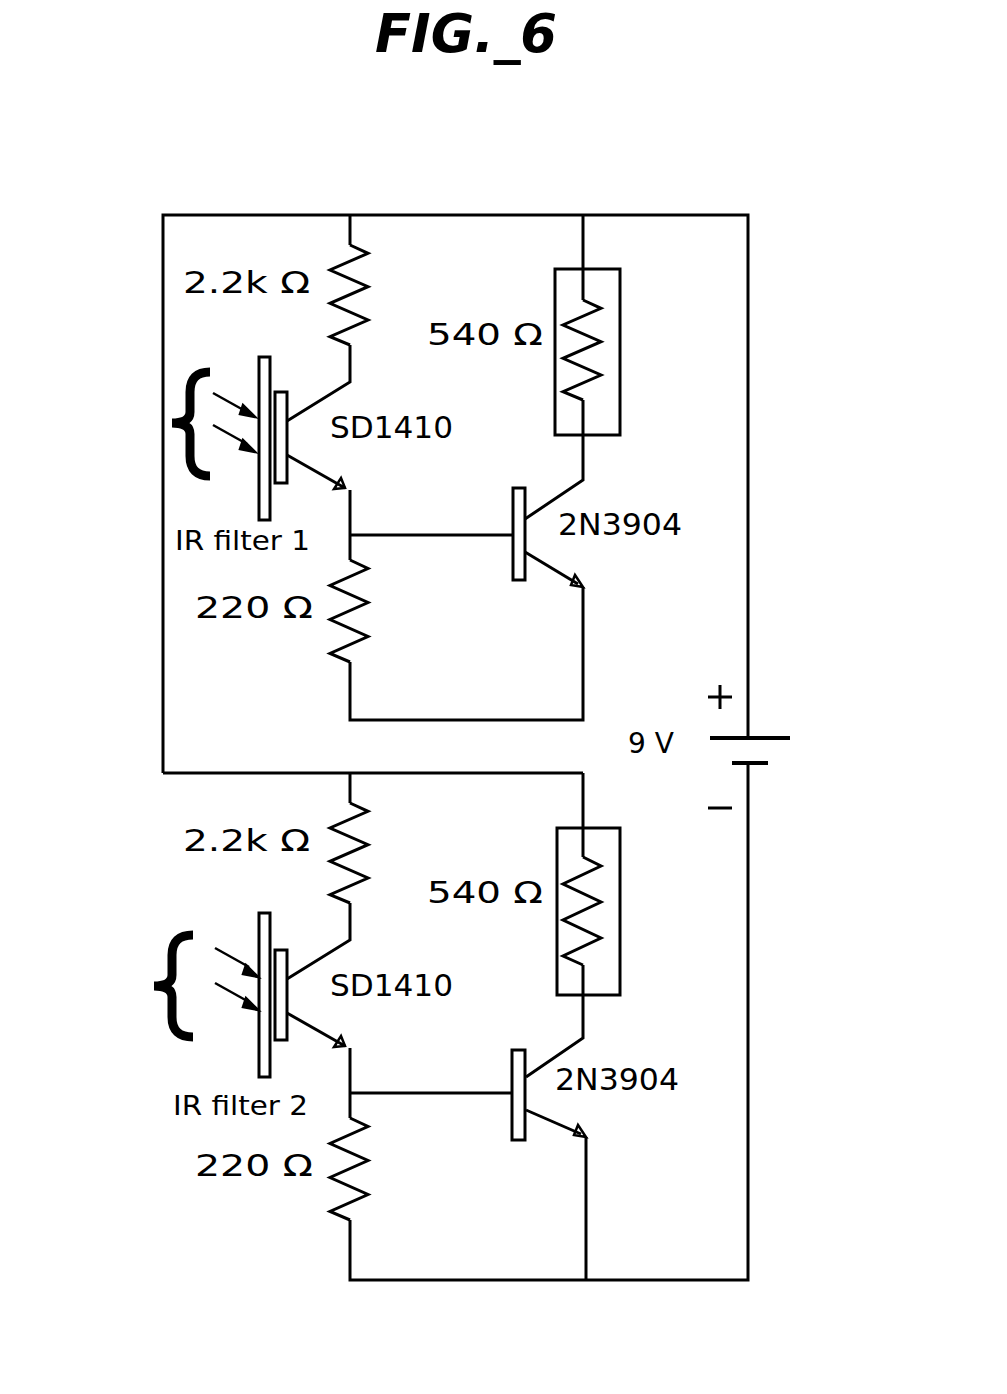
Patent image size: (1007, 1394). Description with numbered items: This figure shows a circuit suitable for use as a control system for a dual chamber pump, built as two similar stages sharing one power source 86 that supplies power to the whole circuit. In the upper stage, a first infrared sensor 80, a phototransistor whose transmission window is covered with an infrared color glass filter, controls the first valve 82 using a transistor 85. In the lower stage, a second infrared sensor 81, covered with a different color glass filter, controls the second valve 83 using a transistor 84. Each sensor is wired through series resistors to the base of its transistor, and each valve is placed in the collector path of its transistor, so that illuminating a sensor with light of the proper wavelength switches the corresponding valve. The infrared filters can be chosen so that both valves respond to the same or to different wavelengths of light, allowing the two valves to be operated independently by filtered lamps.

The first infrared sensor 80 is at (171, 438).
The second infrared sensor 81 is at (178, 995).
The first valve 82 is at (620, 400).
The second valve 83 is at (620, 970).
The transistor 84 is at (512, 1137).
The transistor 85 is at (513, 578).
The power source 86 is at (793, 746).